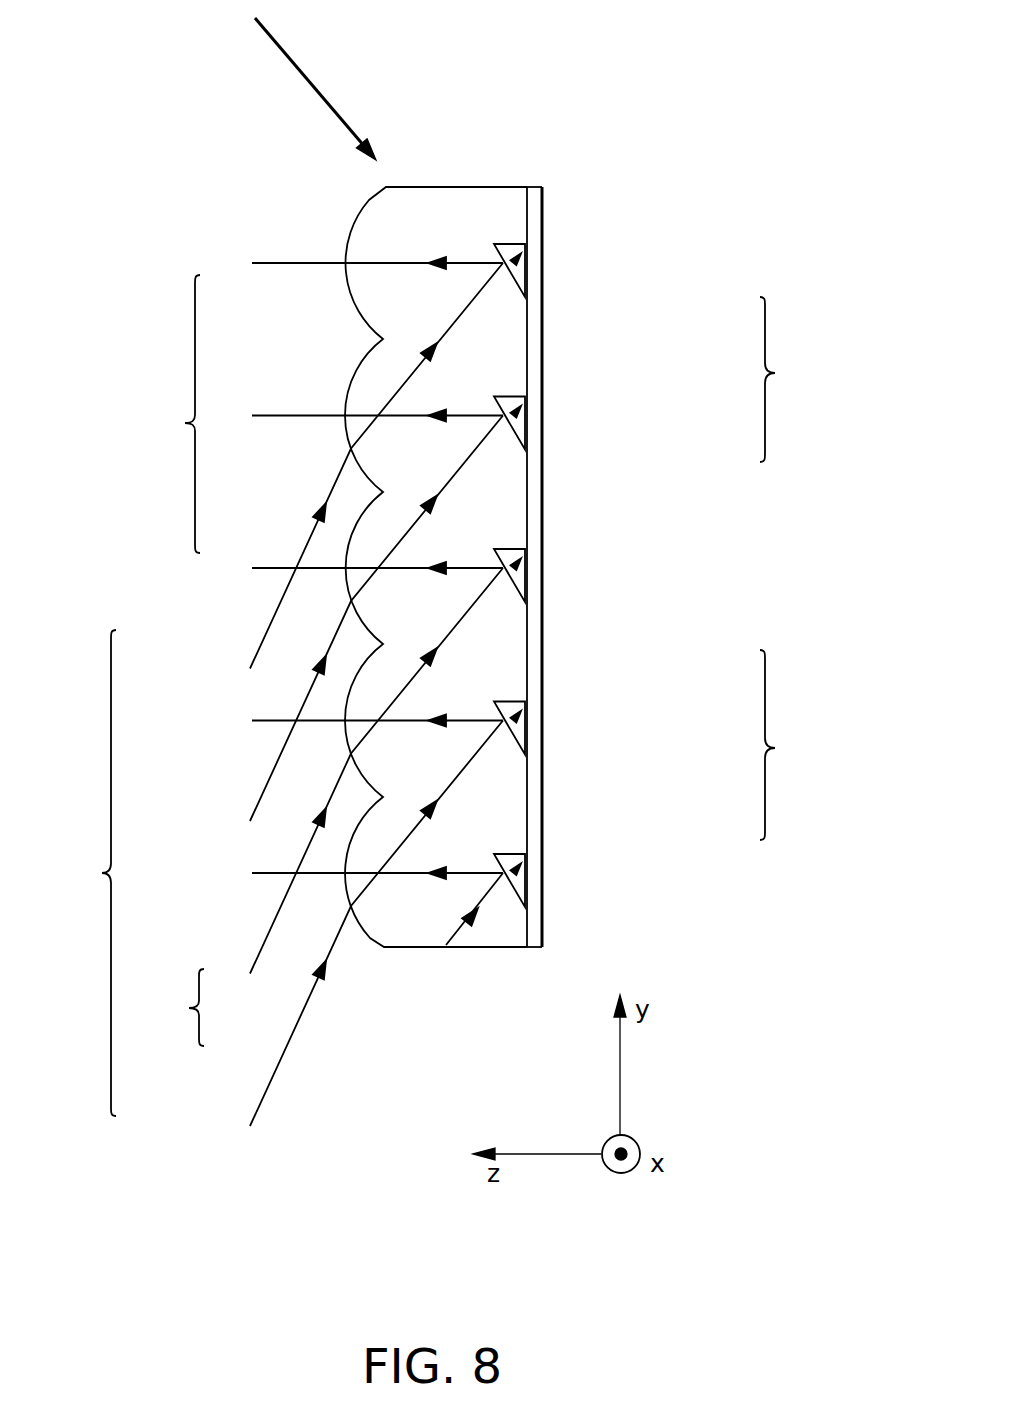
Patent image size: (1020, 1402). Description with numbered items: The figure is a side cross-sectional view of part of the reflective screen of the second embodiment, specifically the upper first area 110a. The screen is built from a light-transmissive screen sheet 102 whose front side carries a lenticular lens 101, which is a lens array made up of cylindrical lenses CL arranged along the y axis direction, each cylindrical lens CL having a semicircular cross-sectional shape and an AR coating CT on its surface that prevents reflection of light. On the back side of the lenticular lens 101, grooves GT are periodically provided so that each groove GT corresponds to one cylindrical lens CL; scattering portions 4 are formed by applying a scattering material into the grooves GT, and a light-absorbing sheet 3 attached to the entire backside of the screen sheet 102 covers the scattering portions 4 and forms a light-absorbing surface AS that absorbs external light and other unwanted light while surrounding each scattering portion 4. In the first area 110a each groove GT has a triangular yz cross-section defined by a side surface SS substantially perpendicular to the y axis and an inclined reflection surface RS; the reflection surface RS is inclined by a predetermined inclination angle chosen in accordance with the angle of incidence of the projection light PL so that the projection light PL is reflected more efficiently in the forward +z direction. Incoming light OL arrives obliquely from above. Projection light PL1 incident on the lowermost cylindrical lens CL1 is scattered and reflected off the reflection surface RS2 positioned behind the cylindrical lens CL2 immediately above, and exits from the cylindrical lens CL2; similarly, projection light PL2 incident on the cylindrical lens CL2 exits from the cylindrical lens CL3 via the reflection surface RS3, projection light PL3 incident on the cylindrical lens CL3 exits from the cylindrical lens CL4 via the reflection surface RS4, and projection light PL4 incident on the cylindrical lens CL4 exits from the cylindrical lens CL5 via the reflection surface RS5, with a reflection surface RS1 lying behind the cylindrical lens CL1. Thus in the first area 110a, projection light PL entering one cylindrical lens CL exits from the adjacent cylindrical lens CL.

The first area 110a is at (658, 151).
The lenticular lens 101 is at (377, 207).
The screen sheet 102 is at (453, 197).
The light-absorbing sheet 3 is at (544, 932).
The scattering portions 4 is at (497, 240).
The outgoing light OL is at (268, 42).
The AR coating CT is at (352, 222).
The cylindrical lenses CL is at (173, 660).
The cylindrical lens CL1 is at (356, 876).
The cylindrical lens CL2 is at (366, 762).
The cylindrical lens CL3 is at (358, 537).
The cylindrical lens CL4 is at (358, 375).
The cylindrical lens CL5 is at (355, 292).
The projection light PL is at (87, 873).
The projection light PL1 is at (257, 1080).
The projection light PL2 is at (257, 935).
The projection light PL3 is at (257, 807).
The projection light PL4 is at (257, 654).
The side surface SS is at (512, 241).
The grooves GT is at (522, 257).
The light-absorbing surface AS is at (520, 330).
The reflection surface RS is at (790, 568).
The reflection surface RS1 is at (527, 920).
The reflection surface RS2 is at (527, 771).
The reflection surface RS3 is at (527, 622).
The reflection surface RS4 is at (527, 462).
The reflection surface RS5 is at (527, 312).